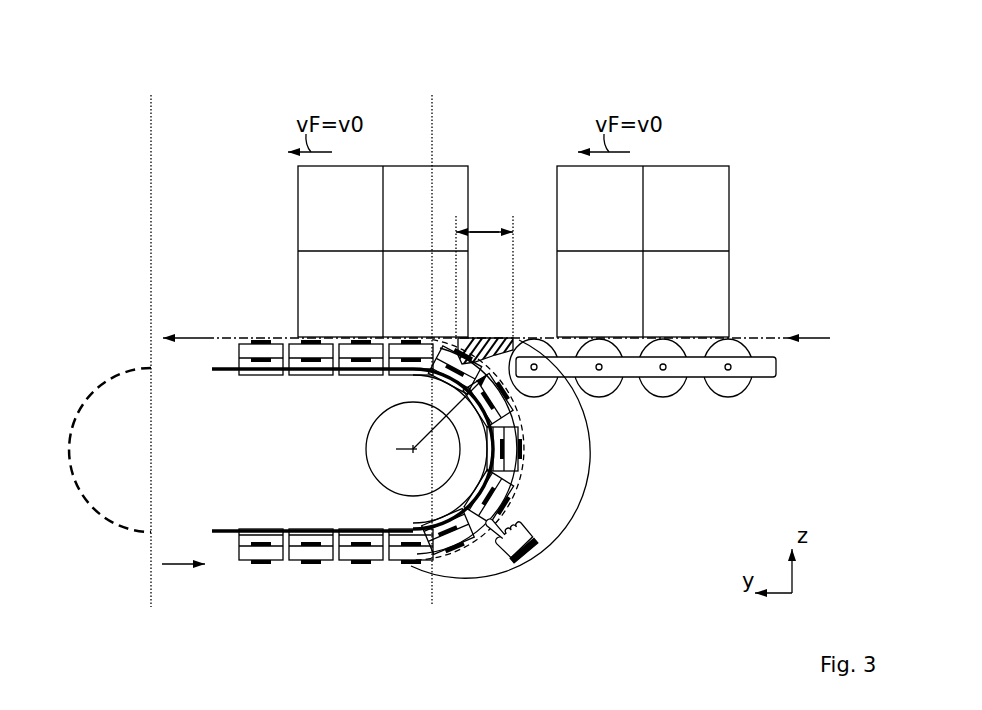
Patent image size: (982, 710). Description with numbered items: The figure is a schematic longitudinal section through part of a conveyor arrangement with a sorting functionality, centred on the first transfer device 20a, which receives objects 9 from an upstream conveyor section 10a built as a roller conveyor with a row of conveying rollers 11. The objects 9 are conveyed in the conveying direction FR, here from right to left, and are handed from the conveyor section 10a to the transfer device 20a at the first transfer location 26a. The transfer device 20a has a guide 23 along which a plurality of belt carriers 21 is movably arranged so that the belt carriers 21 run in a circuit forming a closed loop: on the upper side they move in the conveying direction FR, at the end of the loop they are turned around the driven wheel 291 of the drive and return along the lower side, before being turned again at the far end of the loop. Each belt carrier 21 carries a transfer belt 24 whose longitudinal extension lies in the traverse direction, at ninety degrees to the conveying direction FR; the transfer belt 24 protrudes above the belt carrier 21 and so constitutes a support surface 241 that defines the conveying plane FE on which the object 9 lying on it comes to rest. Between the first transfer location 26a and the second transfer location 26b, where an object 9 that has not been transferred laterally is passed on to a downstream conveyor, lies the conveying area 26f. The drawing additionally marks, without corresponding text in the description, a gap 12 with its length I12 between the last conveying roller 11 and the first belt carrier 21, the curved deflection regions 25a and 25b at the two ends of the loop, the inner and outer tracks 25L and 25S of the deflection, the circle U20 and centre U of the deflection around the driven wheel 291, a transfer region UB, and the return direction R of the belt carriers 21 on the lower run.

The object 9 is at (422, 220).
The conveyor section 10a is at (777, 287).
The conveying roller 11 is at (537, 398).
The transfer gap 12 is at (487, 337).
The gap length I12 is at (483, 231).
The first transfer device 20a is at (195, 283).
The belt carrier 21 is at (270, 376).
The guide 23 is at (777, 368).
The transfer belt 24 is at (259, 568).
The support surface 241 is at (262, 340).
The deflection section 25a is at (500, 565).
The return deflection section 25b is at (101, 558).
The inner guide track 25L is at (509, 481).
The outer guide track 25S is at (517, 528).
The first transfer location 26a is at (478, 92).
The second transfer location 26b is at (93, 88).
The conveying area 26f is at (278, 88).
The driven wheel 291 is at (366, 448).
The deflection circle U20 is at (437, 404).
The deflection center U is at (387, 451).
The transfer region UB is at (526, 468).
The conveying direction FR is at (189, 338).
The conveying plane FE is at (538, 340).
The return direction R is at (178, 565).